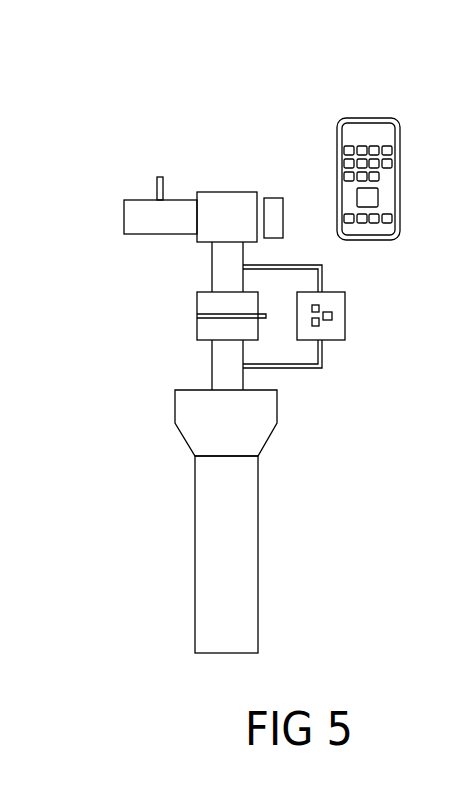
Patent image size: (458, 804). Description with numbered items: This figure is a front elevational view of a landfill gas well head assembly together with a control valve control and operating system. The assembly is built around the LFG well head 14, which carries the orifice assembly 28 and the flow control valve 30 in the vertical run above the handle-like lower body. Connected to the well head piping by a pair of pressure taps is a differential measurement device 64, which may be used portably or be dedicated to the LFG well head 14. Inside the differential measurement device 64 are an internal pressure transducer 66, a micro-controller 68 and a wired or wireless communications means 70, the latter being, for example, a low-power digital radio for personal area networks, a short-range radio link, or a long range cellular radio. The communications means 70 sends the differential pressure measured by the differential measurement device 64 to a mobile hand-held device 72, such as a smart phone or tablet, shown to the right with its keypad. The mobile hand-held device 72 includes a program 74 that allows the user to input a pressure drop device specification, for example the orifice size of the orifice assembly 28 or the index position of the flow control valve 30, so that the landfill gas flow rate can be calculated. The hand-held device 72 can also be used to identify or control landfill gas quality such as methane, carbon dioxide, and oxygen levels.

The LFG well head 14 is at (197, 428).
The orifice assembly 28 is at (196, 328).
The flow control valve 30 is at (228, 200).
The differential measurement device 64 is at (340, 323).
The internal pressure transducer 66 is at (316, 305).
The micro-controller 68 is at (333, 316).
The wired or wireless communications means 70 is at (318, 326).
The mobile hand-held device 72 is at (368, 118).
The program 74 is at (372, 200).